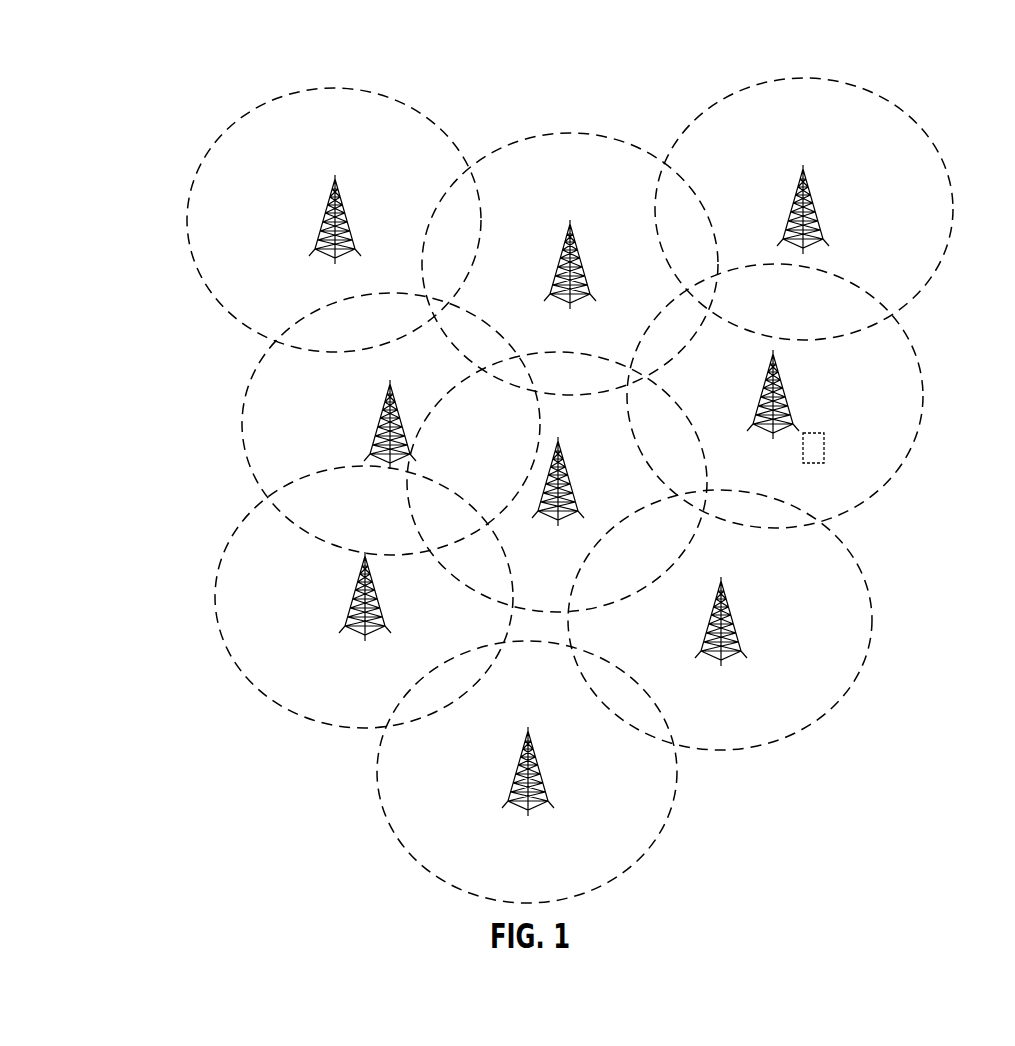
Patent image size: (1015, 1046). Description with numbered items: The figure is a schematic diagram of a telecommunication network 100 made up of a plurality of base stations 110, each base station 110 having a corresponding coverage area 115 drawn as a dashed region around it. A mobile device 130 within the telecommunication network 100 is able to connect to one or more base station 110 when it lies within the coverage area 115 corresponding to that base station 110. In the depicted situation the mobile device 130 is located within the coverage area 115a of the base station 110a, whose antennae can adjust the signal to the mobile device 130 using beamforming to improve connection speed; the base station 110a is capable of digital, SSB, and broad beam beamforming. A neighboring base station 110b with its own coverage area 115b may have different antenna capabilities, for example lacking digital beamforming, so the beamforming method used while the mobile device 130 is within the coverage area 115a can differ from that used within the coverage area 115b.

The telecommunication network 100 is at (107, 88).
The base station 110 is at (322, 242).
The coverage area 115 is at (256, 112).
The base station 110a is at (787, 408).
The coverage area 115a is at (897, 468).
The mobile device 130 is at (824, 448).
The base station 110b is at (738, 629).
The coverage area 115b is at (770, 747).